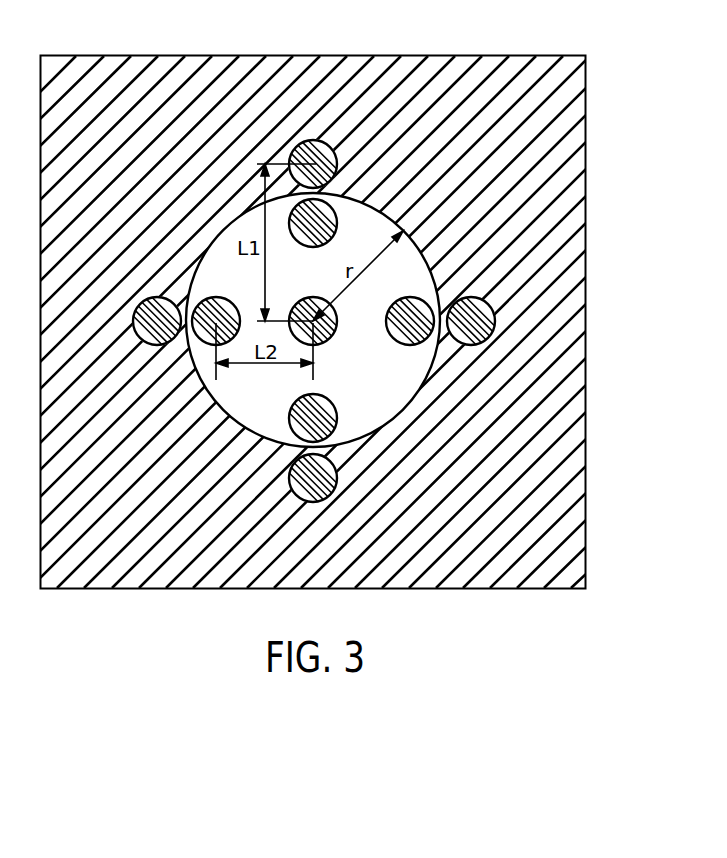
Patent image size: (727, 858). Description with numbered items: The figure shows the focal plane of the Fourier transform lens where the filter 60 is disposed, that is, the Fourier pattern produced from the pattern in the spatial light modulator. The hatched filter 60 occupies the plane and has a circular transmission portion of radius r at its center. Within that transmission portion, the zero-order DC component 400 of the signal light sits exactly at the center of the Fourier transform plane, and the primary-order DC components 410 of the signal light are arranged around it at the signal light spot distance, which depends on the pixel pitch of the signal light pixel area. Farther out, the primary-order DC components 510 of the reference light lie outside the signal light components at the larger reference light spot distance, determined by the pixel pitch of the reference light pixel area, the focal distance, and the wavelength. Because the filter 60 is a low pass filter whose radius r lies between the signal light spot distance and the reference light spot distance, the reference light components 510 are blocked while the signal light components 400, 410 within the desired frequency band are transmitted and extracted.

The filter 60 is at (124, 590).
The 0-order DC component 400 is at (298, 300).
The primary-order DC components 410 is at (291, 410).
The primary-order DC components 510 is at (316, 140).